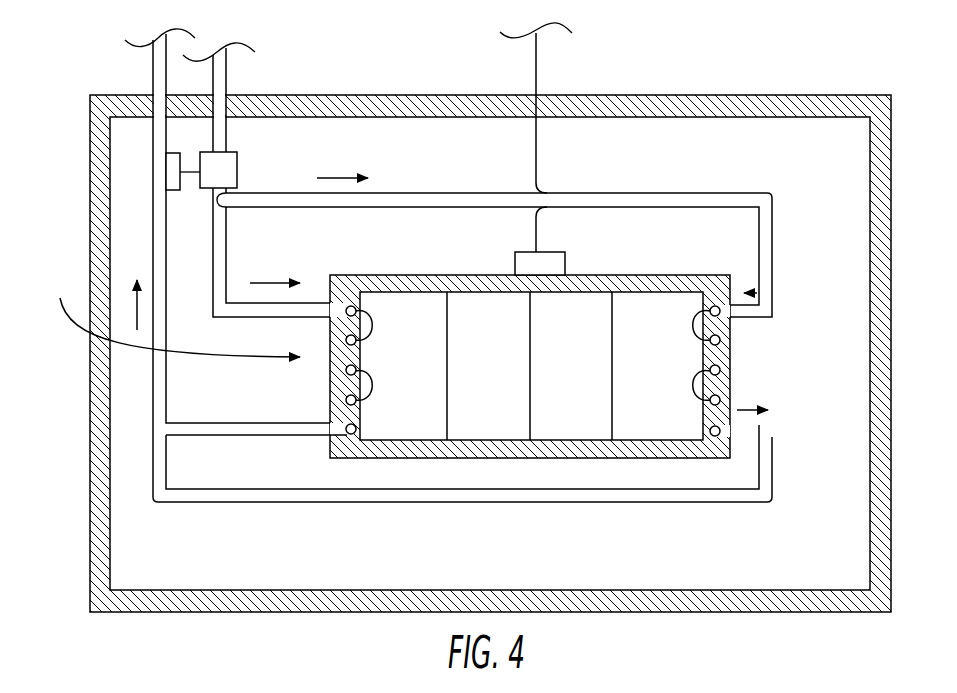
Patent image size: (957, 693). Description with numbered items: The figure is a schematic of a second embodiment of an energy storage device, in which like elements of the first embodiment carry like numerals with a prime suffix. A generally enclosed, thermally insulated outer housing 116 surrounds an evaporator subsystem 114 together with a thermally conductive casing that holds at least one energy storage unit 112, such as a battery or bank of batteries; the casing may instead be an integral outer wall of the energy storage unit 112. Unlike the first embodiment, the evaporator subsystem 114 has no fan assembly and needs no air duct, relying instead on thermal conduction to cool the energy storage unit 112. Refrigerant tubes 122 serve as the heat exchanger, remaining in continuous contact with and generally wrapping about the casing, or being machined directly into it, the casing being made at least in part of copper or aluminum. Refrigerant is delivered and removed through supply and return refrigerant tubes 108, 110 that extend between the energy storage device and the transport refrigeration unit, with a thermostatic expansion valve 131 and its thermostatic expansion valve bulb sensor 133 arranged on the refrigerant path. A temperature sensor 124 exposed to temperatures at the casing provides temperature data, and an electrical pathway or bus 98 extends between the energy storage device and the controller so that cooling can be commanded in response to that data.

The electrical pathway or bus 98 is at (536, 63).
The supply refrigerant tube 108 is at (227, 78).
The return refrigerant tube 110 is at (153, 80).
The energy storage unit 112 is at (430, 386).
The evaporator subsystem 114 is at (167, 309).
The outer housing 116 is at (740, 95).
The refrigerant tube 122 is at (348, 400).
The temperature sensor 124 is at (565, 258).
The thermostatic expansion valve 131 is at (237, 170).
The thermostatic expansion valve bulb sensor 133 is at (180, 190).